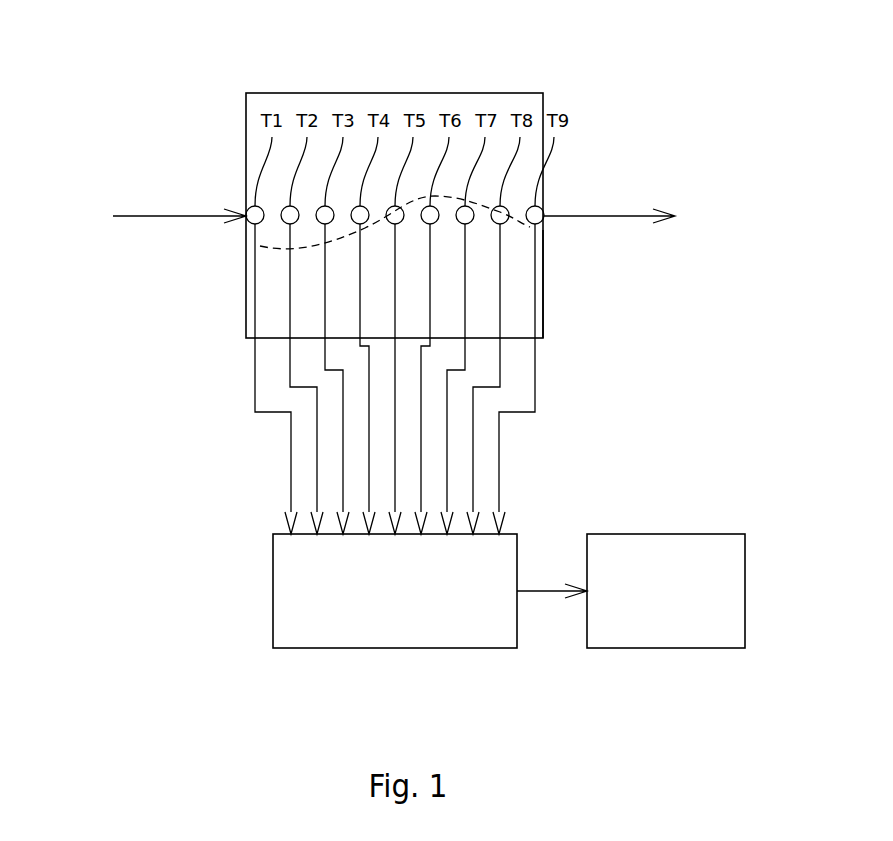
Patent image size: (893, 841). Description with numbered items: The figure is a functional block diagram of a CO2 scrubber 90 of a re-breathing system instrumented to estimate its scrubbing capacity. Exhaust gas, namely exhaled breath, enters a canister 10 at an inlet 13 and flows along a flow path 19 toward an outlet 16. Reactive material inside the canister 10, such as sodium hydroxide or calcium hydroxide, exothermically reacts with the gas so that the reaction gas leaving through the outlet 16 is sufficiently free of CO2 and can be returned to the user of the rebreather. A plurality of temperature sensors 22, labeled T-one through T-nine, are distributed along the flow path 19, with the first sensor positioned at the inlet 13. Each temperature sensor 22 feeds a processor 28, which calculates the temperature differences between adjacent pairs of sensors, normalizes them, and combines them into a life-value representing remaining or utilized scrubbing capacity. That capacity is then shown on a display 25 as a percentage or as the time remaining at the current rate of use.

The canister 10 is at (506, 93).
The inlet 13 is at (246, 213).
The outlet 16 is at (546, 215).
The flow path 19 is at (412, 198).
The temperature sensors 22 is at (565, 258).
The display 25 is at (658, 534).
The processor 28 is at (273, 565).
The CO2 scrubber 90 is at (172, 304).